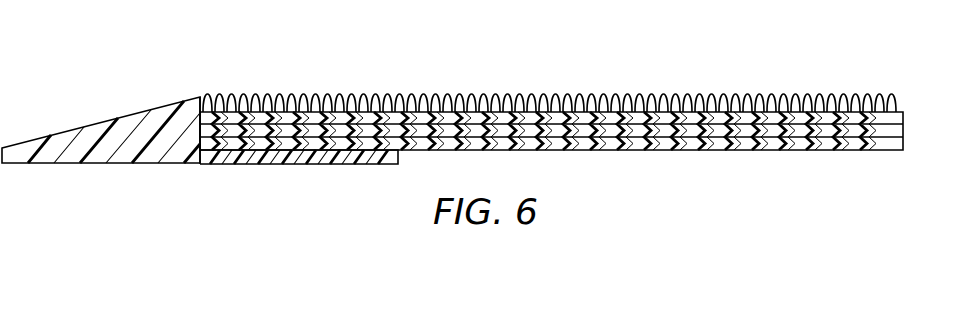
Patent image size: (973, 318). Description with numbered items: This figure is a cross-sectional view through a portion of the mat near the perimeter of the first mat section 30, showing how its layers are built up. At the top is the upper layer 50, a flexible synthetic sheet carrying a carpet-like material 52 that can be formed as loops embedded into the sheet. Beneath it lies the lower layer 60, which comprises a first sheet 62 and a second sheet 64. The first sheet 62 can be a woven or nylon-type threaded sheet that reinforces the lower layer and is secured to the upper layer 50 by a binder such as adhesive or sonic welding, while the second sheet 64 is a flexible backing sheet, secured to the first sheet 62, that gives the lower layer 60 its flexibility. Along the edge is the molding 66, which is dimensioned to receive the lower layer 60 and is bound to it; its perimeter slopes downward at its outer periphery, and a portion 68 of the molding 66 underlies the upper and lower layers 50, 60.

The first mat section 30 is at (206, 93).
The upper layer 50 is at (586, 116).
The carpet-like material 52 is at (830, 93).
The lower layer 60 is at (914, 118).
The first sheet 62 is at (824, 127).
The second sheet 64 is at (592, 150).
The molding 66 is at (103, 122).
The outer periphery portion of the molding 68 is at (302, 155).